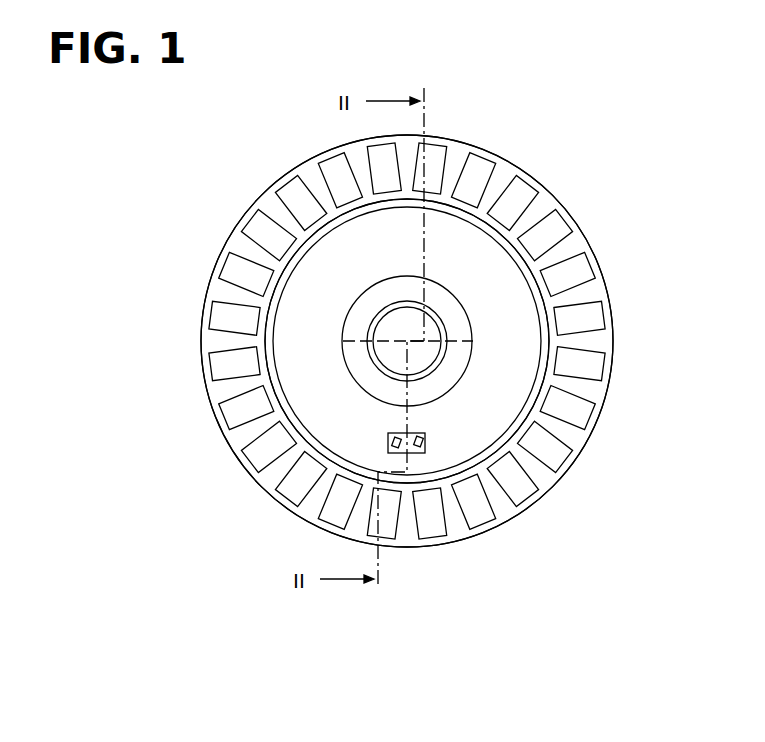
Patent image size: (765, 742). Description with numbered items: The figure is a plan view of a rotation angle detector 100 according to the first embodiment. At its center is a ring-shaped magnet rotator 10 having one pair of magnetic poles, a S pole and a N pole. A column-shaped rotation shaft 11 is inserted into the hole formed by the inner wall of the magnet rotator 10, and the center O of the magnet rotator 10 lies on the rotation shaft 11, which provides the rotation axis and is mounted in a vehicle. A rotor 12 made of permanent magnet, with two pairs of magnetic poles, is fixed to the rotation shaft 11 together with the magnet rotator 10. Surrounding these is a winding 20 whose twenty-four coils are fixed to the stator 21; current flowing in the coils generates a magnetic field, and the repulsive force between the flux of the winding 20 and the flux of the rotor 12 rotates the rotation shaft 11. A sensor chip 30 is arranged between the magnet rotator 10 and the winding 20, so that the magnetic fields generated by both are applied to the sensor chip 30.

The rotation angle detector 100 is at (656, 69).
The magnet rotator 10 is at (347, 313).
The rotation shaft 11 is at (367, 348).
The rotor 12 is at (277, 283).
The winding 20 is at (570, 218).
The stator 21 is at (545, 190).
The sensor chip 30 is at (434, 439).